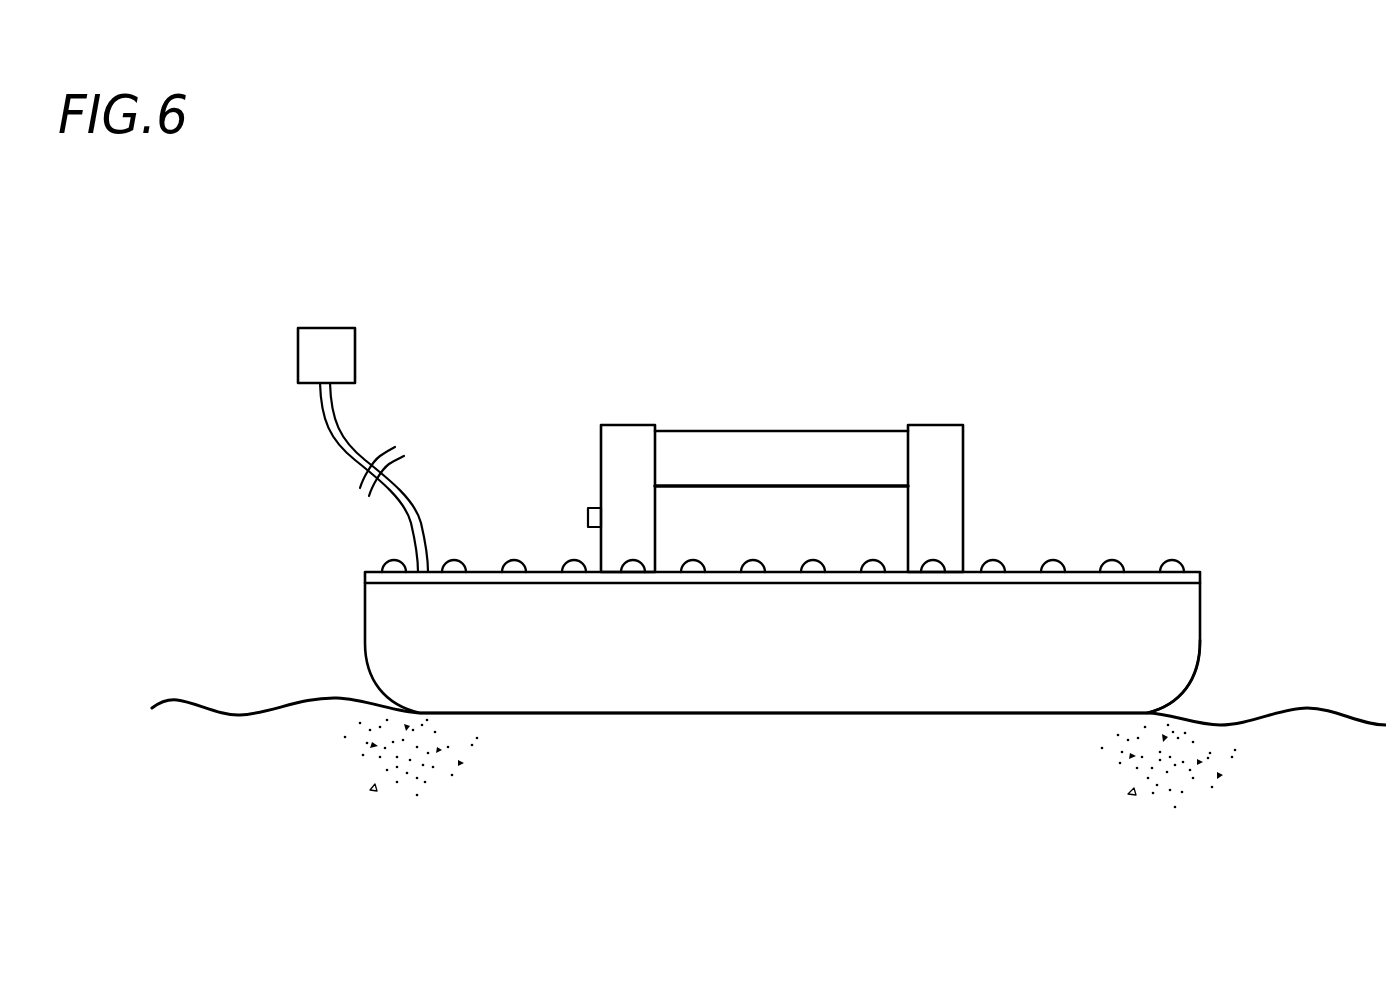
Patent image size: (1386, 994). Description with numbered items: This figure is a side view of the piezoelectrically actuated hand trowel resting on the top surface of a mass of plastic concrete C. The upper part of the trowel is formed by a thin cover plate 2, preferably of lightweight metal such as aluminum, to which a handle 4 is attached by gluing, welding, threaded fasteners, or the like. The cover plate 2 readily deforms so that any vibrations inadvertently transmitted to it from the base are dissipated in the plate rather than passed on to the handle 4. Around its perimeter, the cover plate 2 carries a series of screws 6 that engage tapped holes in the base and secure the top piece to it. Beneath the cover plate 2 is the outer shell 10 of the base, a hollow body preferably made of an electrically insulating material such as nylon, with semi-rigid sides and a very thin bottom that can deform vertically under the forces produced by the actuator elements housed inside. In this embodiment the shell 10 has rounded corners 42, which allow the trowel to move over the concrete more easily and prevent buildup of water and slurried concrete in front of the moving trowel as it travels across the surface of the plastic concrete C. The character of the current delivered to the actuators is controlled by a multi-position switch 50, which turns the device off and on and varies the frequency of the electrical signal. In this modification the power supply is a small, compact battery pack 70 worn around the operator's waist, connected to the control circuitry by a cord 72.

The cover plate 2 is at (362, 582).
The handle 4 is at (802, 434).
The screws 6 is at (1178, 563).
The outer shell 10 is at (752, 643).
The corners 42 is at (1187, 688).
The multi-position switch 50 is at (588, 518).
The battery pack 70 is at (298, 348).
The cord 72 is at (342, 433).
The plastic concrete C is at (1183, 752).